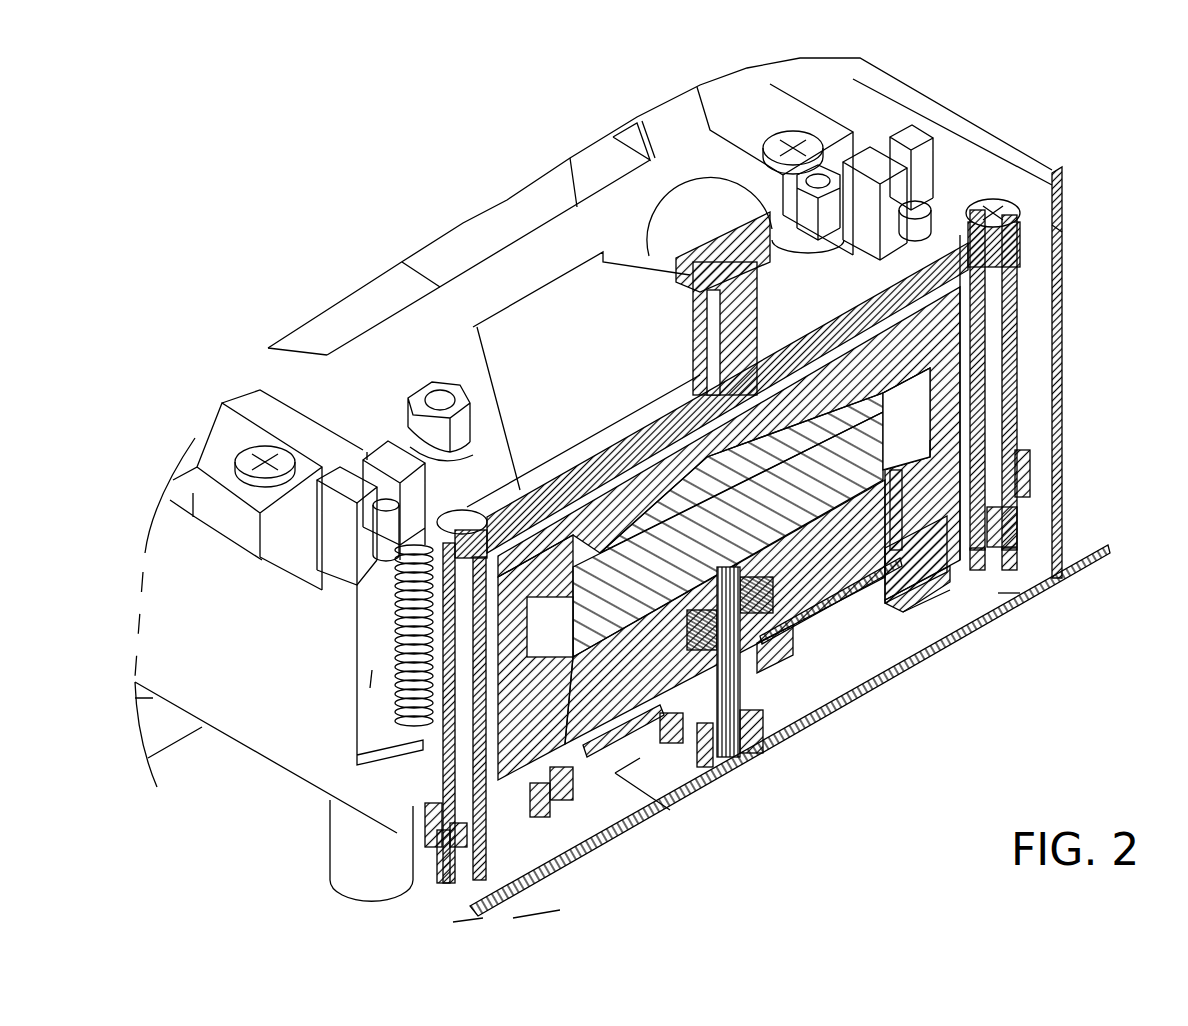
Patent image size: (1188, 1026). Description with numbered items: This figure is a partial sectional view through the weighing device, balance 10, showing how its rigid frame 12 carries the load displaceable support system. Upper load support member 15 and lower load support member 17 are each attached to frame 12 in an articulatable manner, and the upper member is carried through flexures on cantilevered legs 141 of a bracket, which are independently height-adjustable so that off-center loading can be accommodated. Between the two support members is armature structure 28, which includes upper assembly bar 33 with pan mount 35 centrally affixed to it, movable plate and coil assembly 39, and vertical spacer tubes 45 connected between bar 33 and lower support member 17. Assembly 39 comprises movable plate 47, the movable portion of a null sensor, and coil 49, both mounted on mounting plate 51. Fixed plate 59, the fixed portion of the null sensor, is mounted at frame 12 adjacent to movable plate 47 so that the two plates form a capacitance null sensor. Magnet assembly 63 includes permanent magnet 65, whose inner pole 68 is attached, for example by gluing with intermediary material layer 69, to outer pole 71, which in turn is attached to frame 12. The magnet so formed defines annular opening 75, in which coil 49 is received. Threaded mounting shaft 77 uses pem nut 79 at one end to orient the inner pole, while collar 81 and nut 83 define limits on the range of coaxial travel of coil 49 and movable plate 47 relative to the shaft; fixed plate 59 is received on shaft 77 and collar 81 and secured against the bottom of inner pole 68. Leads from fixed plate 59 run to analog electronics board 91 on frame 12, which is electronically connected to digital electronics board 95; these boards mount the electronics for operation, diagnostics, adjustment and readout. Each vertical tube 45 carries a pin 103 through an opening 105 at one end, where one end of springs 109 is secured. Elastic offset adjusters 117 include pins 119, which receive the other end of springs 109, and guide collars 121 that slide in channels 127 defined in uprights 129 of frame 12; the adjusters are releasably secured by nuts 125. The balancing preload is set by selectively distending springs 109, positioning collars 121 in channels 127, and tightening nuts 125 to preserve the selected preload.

The balance 10 is at (1056, 111).
The rigid frame 12 is at (258, 740).
The upper load support member 15 is at (525, 240).
The lower load support member 17 is at (540, 880).
The armature structure 28 is at (641, 388).
The upper assembly bar 33 is at (1062, 232).
The pan mount 35 is at (692, 227).
The movable plate and coil assembly 39 is at (860, 694).
The vertical spacer tubes 45 is at (1015, 335).
The movable plate 47 is at (812, 600).
The coil 49 is at (945, 582).
The mounting plate 51 is at (1057, 567).
The fixed plate 59 is at (850, 593).
The magnet assembly 63 is at (1015, 312).
The permanent magnet 65 is at (1017, 508).
The inner pole 68 is at (663, 742).
The intermediary material layer 69 is at (693, 517).
The outer pole 71 is at (910, 413).
The annular opening 75 is at (950, 440).
The mounting shaft 77 is at (733, 730).
The pem nut 79 is at (797, 697).
The collar 81 is at (670, 737).
The nut 83 is at (752, 728).
The analog electronics board 91 is at (1020, 593).
The digital electronics board 95 is at (1040, 165).
The pin 103 is at (1030, 480).
The opening 105 is at (440, 745).
The springs 109 is at (985, 290).
The elastic offset adjusters 117 is at (945, 215).
The pins 119 is at (970, 238).
The guide collars 121 is at (935, 212).
The nuts 125 is at (862, 145).
The channels 127 is at (965, 225).
The uprights 129 is at (925, 150).
The cantilevered legs 141 is at (740, 108).